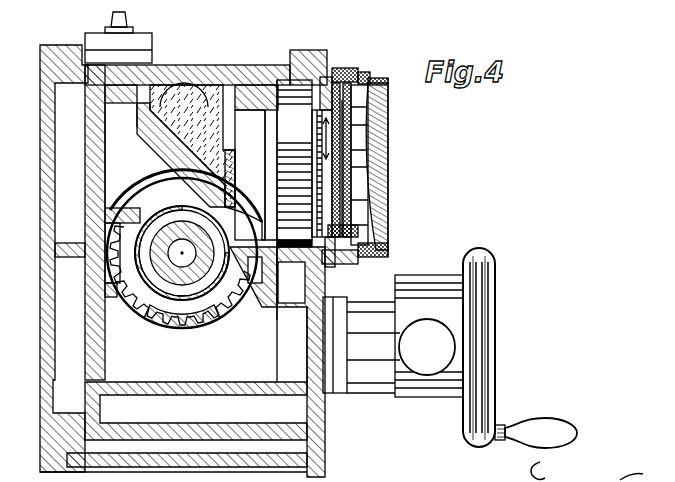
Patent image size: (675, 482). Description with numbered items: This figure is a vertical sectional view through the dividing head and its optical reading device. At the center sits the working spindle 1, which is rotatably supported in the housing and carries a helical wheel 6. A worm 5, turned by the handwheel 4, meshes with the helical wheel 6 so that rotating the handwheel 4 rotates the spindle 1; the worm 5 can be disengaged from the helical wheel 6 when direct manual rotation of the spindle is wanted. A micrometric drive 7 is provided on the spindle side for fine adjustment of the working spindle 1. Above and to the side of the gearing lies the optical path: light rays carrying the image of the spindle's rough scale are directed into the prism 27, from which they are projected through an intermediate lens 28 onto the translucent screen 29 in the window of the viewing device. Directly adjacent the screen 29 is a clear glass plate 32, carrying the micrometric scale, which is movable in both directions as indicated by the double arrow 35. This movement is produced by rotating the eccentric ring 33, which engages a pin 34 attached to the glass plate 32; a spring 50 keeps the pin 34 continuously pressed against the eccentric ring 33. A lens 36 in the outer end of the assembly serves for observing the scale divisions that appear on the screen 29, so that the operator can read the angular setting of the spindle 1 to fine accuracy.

The working spindle 1 is at (191, 273).
The handwheel 4 is at (468, 423).
The worm 5 is at (168, 331).
The helical wheel 6 is at (128, 306).
The micrometric drive 7 is at (416, 355).
The prism 27 is at (141, 139).
The intermediate lens 28 is at (266, 124).
The screen 29 is at (351, 132).
The clear glass plate 32 is at (336, 175).
The eccentric ring 33 is at (375, 83).
The pin 34 is at (361, 76).
The double arrow 35 is at (326, 133).
The lens 36 is at (378, 190).
The spring 50 is at (336, 69).